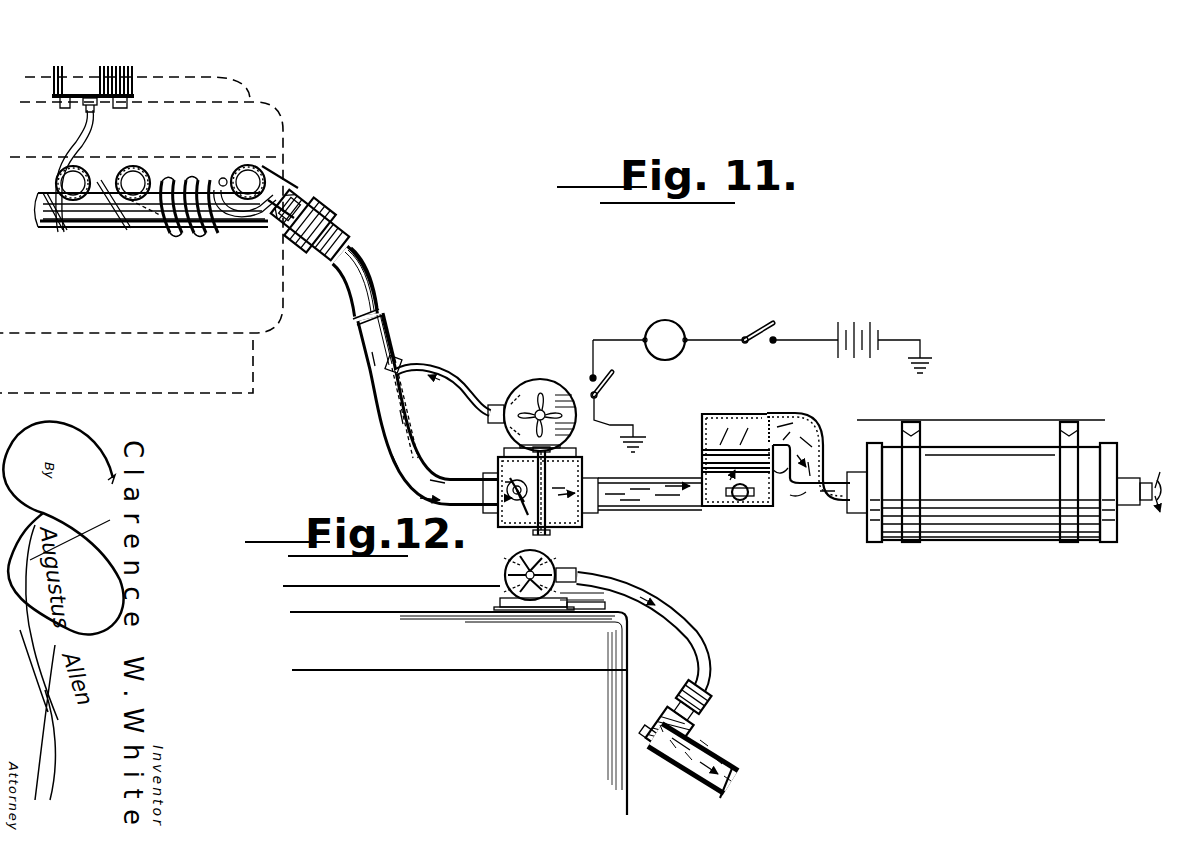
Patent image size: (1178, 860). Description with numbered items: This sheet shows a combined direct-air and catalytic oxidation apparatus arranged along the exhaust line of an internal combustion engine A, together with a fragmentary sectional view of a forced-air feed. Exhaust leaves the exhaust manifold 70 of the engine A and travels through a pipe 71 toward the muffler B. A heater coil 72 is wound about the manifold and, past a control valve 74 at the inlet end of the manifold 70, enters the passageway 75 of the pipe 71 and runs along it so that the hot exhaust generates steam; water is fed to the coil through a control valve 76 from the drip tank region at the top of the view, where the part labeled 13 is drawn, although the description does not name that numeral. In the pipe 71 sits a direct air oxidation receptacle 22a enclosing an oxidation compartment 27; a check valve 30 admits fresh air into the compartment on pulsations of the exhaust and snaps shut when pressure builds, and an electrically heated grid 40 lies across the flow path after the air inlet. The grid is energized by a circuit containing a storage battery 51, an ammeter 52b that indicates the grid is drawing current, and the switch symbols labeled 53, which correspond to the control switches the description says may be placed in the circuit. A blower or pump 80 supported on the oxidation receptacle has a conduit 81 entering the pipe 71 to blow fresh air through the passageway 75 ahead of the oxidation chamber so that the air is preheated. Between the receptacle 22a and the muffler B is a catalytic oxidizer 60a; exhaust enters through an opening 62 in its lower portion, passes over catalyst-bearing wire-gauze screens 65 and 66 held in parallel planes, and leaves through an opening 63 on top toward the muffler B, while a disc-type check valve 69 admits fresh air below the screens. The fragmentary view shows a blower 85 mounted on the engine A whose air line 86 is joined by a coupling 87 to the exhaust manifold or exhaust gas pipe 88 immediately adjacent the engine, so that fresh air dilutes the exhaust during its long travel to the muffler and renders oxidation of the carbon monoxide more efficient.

In FIG. 11, the engine block 13 is at (133, 76).
In FIG. 11, the control valve 76 is at (74, 124).
In FIG. 11, the exhaust manifold 70 is at (150, 228).
In FIG. 11, the heater coil 72 is at (190, 232).
In FIG. 11, the control valve 74 is at (268, 228).
In FIG. 11, the passageway 75 is at (343, 253).
In FIG. 11, the pipe 71 is at (392, 344).
In FIG. 11, the conduit 81 is at (438, 386).
In FIG. 11, the blower or pump 80 is at (532, 388).
In FIG. 11, the oxidation compartment 27 is at (584, 470).
In FIG. 11, the check valve 30 is at (502, 506).
In FIG. 11, the grid 40 is at (526, 518).
In FIG. 11, the direct air oxidation receptacle 22a is at (580, 530).
In FIG. 11, the opening 62 is at (712, 500).
In FIG. 11, the screen 66 is at (704, 445).
In FIG. 11, the check valve 69 is at (740, 502).
In FIG. 11, the opening 63 is at (772, 428).
In FIG. 11, the screen 65 is at (776, 483).
In FIG. 11, the catalytic oxidizer 60a is at (772, 506).
In FIG. 11, the muffler B is at (968, 460).
In FIG. 11, the ammeter 52b is at (668, 350).
In FIG. 11, the switch 53 is at (604, 388).
In FIG. 11, the storage battery 51 is at (840, 350).
In FIG. 12, the internal combustion engine A is at (607, 652).
In FIG. 12, the blower 85 is at (520, 598).
In FIG. 12, the air line 86 is at (706, 640).
In FIG. 12, the coupling 87 is at (700, 712).
In FIG. 12, the exhaust manifold or exhaust gas pipe 88 is at (733, 760).